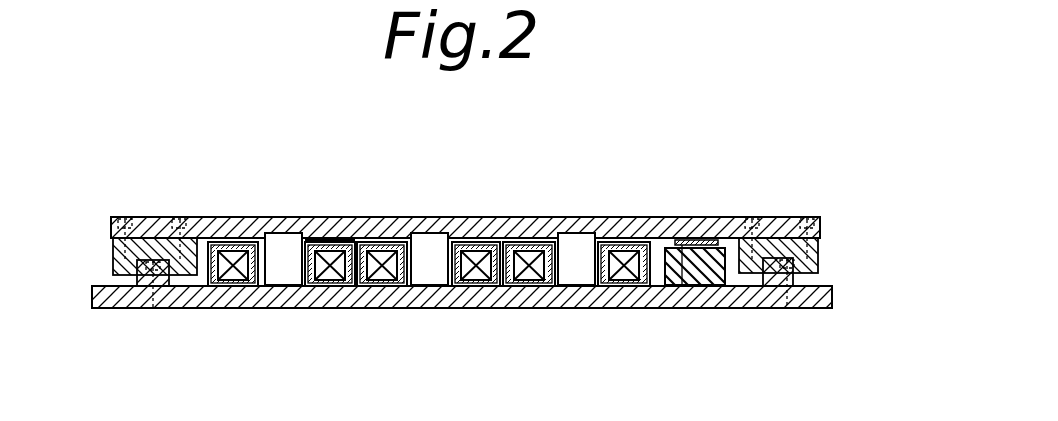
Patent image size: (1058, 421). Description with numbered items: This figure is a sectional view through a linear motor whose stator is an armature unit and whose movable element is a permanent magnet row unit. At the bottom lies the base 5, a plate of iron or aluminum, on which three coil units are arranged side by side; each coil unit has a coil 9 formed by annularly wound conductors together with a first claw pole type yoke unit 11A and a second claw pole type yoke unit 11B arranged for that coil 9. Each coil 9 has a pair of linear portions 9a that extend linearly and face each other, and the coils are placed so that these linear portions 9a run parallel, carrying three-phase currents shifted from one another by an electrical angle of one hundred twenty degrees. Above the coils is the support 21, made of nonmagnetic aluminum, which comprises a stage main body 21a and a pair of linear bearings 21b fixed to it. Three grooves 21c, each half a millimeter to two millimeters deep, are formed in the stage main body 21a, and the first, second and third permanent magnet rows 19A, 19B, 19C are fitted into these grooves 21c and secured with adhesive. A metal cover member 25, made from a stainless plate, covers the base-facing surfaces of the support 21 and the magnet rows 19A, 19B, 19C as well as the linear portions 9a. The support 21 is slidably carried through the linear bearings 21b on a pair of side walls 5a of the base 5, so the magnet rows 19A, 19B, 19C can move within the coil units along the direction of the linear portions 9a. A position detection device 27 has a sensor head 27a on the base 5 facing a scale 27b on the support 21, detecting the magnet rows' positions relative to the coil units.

The base 5 is at (427, 313).
The side walls 5a is at (162, 308).
The coil 9 is at (432, 267).
The linear portions 9a is at (223, 288).
The first claw pole type yoke unit 11A is at (258, 288).
The second claw pole type yoke unit 11B is at (315, 288).
The first permanent magnet row 19A is at (275, 242).
The second permanent magnet row 19B is at (419, 243).
The third permanent magnet row 19C is at (569, 243).
The support 21 is at (465, 184).
The stage main body 21a is at (613, 217).
The linear bearings 21b is at (162, 217).
The grooves 21c is at (282, 234).
The metal cover member 25 is at (318, 238).
The position detection device 27 is at (724, 315).
The sensor head 27a is at (684, 296).
The scale 27b is at (678, 300).